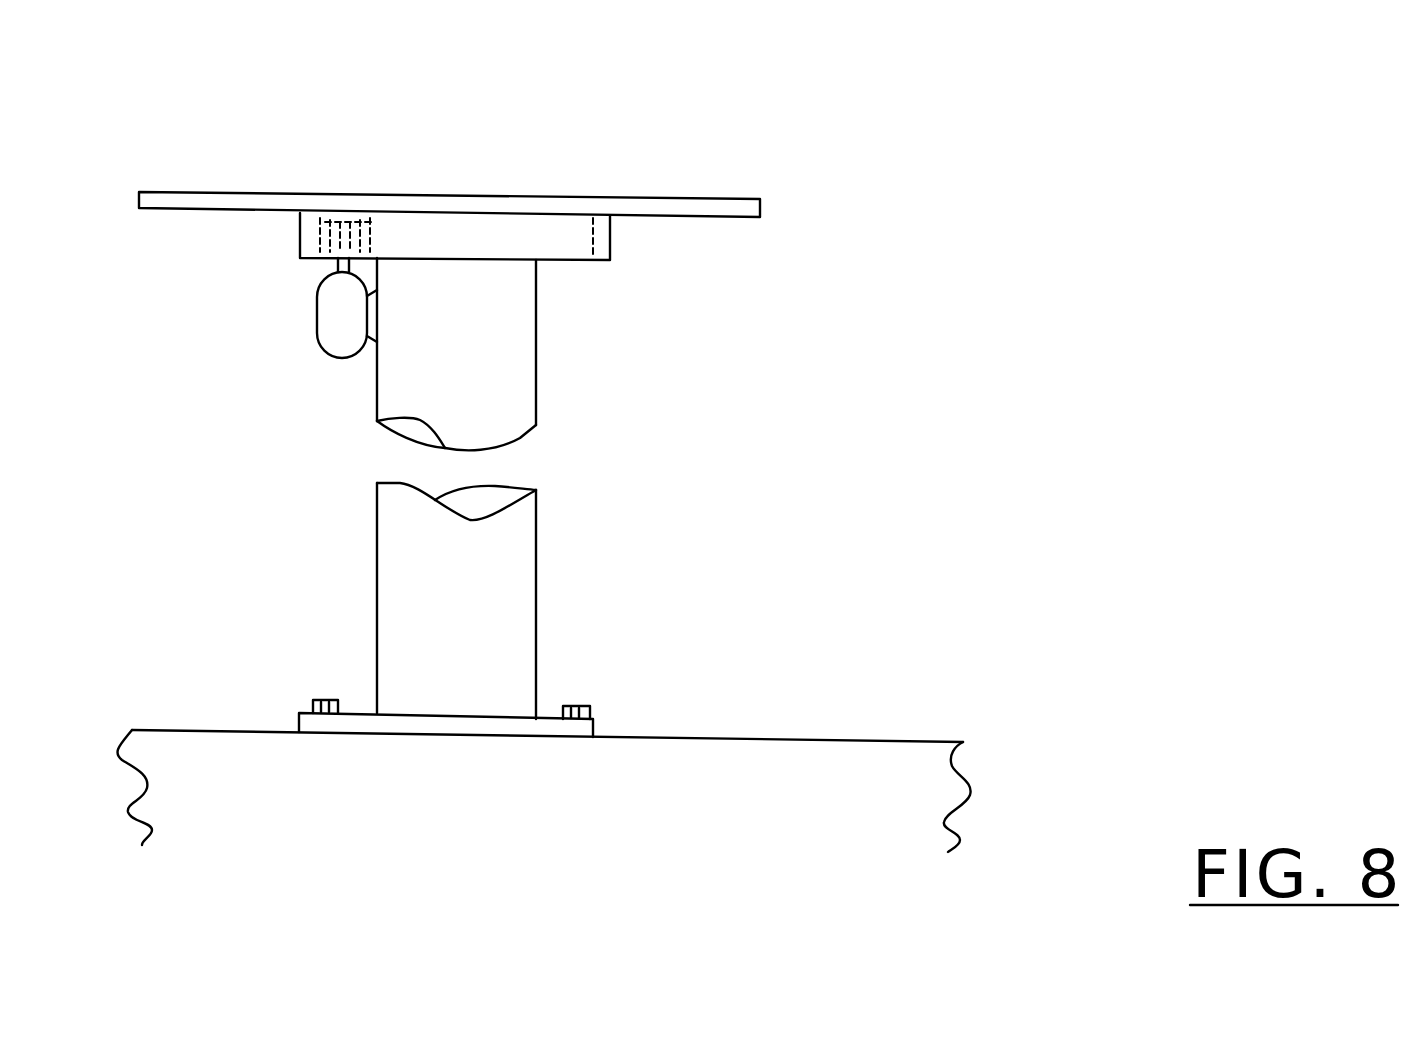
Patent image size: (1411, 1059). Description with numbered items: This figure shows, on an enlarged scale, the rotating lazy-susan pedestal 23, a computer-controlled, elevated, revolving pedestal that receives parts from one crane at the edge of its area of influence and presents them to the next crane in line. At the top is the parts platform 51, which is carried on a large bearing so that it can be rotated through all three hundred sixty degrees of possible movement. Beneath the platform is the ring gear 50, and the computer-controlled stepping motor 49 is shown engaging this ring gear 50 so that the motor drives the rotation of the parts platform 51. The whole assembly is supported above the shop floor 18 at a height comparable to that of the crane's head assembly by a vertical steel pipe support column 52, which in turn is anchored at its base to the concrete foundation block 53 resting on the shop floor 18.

The shop floor 18 is at (612, 843).
The rotating lazy-susan pedestal 23 is at (425, 175).
The computer-controlled stepping motor 49 is at (317, 338).
The ring gear 50 is at (308, 237).
The parts platform 51 is at (587, 195).
The support column 52 is at (536, 380).
The concrete foundation block 53 is at (773, 773).